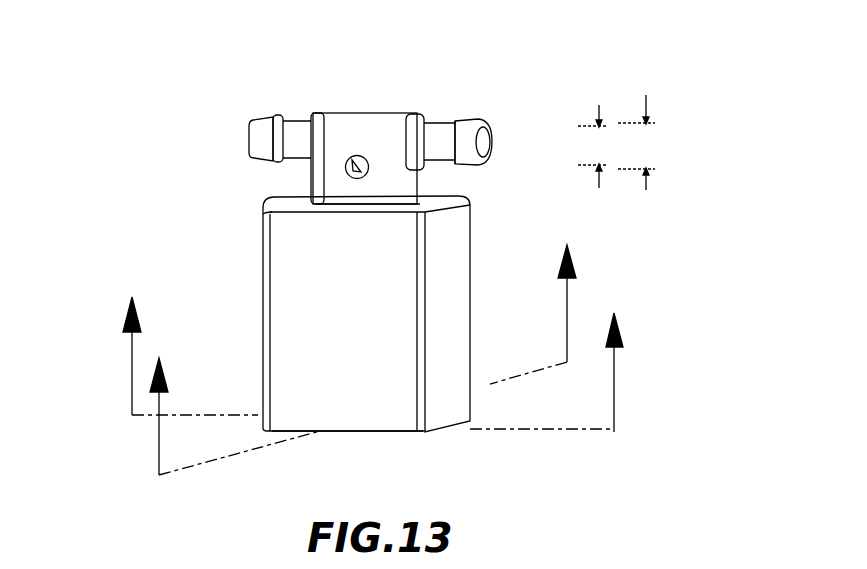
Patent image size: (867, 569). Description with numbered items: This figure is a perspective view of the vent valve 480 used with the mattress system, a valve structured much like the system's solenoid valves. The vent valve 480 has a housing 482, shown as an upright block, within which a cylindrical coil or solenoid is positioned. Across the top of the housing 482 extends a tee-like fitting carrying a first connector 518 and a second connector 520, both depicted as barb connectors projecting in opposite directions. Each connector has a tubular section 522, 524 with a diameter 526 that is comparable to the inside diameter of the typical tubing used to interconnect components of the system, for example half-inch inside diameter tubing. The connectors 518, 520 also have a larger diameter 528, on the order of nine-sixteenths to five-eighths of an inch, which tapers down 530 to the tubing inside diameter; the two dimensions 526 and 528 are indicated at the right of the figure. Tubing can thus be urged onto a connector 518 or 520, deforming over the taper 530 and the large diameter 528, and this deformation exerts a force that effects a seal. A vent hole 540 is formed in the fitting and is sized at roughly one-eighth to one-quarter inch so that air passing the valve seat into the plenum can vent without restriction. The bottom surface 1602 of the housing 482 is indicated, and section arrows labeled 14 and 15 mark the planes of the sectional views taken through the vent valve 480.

The vent valve 480 is at (158, 243).
The housing 482 is at (262, 315).
The first connector 518 is at (483, 121).
The second connector 520 is at (357, 140).
The tubular section 522 is at (498, 96).
The tubular section 524 is at (300, 120).
The diameter 526 is at (600, 105).
The larger diameter 528 is at (647, 104).
The taper 530 is at (472, 165).
The vent hole 540 is at (358, 179).
The bottom surface 1602 is at (383, 418).
The section line 14- 14 is at (379, 364).
The section line 15- 15 is at (380, 359).